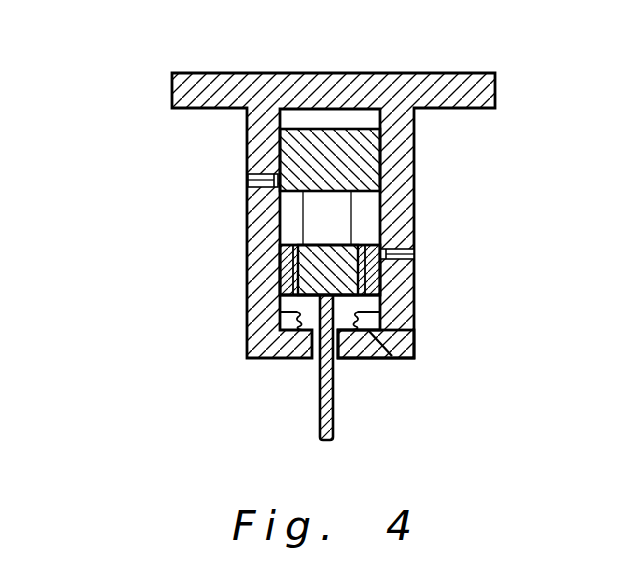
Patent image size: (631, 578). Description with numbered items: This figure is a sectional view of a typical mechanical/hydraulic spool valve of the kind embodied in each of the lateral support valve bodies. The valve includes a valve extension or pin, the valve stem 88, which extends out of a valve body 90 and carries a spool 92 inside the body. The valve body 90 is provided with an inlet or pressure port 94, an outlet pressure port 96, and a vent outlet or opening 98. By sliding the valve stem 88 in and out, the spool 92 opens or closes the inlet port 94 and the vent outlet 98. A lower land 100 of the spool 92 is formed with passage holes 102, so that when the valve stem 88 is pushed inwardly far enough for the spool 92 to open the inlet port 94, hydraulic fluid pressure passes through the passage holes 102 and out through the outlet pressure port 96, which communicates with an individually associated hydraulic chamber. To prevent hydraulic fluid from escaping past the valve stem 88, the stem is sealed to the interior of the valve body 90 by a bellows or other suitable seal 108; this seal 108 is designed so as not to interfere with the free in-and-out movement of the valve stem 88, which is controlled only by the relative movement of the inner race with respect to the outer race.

The valve stem 88 is at (335, 398).
The valve body 90 is at (397, 133).
The spool 92 is at (333, 143).
The inlet or pressure port 94 is at (262, 177).
The outlet pressure port 96 is at (413, 343).
The vent outlet 98 is at (400, 250).
The lower land 100 is at (318, 296).
The passage holes 102 is at (290, 263).
The seal 108 is at (366, 318).